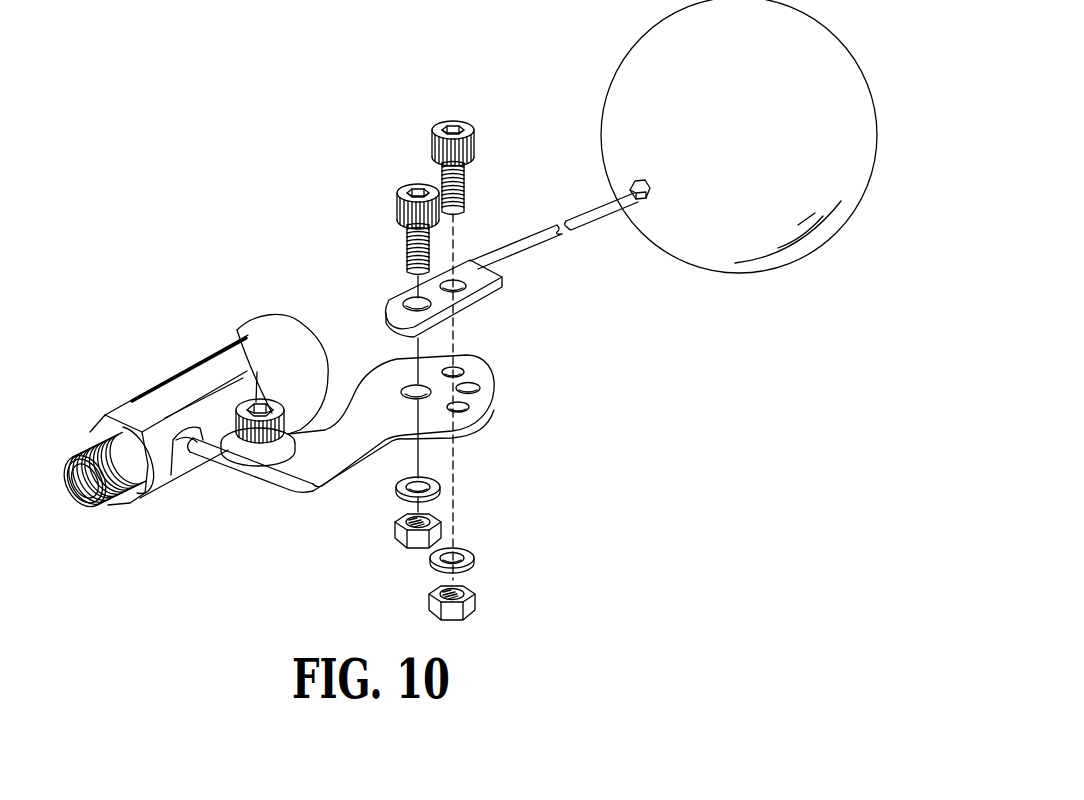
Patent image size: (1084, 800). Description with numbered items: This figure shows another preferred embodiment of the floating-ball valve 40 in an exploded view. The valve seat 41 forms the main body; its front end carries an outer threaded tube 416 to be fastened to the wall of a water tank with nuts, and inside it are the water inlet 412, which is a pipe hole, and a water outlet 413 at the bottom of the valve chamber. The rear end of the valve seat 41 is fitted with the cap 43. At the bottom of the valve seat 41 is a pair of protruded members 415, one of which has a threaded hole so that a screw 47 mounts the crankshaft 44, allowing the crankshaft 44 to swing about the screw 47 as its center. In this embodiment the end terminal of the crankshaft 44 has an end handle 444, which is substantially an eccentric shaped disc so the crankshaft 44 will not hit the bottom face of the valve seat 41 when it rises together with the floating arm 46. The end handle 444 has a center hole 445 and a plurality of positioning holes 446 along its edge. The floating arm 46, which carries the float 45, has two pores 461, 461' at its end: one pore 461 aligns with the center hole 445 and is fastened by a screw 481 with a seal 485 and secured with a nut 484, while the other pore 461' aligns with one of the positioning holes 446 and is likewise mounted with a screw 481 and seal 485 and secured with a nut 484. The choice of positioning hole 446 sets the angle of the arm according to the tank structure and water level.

The floating-ball valve 40 is at (211, 264).
The valve seat 41 is at (153, 400).
The water inlet 412 is at (87, 493).
The water outlet 413 is at (182, 470).
The protruded members 415 is at (251, 477).
The outer threaded tube 416 is at (88, 440).
The cap 43 is at (274, 337).
The crankshaft 44 is at (308, 475).
The end handle 444 is at (440, 420).
The center hole 445 is at (410, 375).
The positioning holes 446 is at (470, 383).
The float 45 is at (650, 40).
The floating arm 46 is at (560, 224).
The pores 461 is at (412, 298).
The pore 461' is at (507, 290).
The screw 47 is at (257, 372).
The screw 481 is at (466, 122).
The nut 484 is at (393, 530).
The seal 485 is at (398, 478).